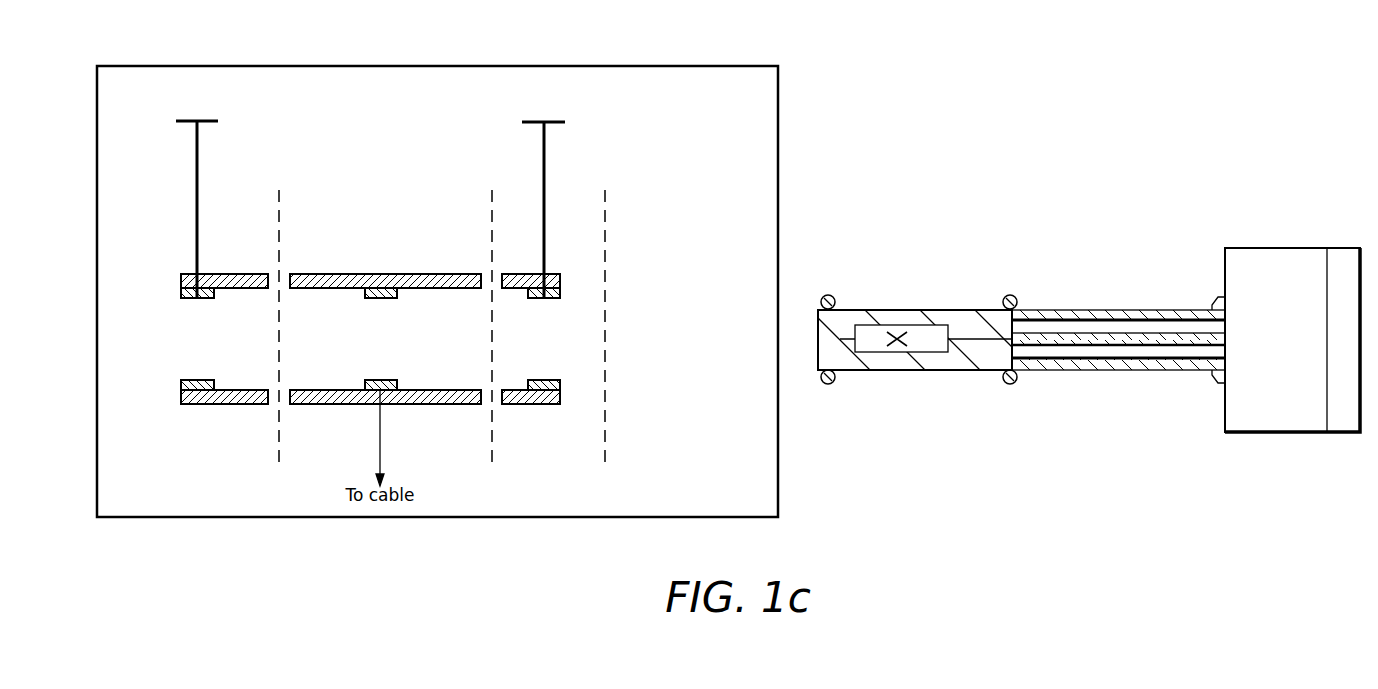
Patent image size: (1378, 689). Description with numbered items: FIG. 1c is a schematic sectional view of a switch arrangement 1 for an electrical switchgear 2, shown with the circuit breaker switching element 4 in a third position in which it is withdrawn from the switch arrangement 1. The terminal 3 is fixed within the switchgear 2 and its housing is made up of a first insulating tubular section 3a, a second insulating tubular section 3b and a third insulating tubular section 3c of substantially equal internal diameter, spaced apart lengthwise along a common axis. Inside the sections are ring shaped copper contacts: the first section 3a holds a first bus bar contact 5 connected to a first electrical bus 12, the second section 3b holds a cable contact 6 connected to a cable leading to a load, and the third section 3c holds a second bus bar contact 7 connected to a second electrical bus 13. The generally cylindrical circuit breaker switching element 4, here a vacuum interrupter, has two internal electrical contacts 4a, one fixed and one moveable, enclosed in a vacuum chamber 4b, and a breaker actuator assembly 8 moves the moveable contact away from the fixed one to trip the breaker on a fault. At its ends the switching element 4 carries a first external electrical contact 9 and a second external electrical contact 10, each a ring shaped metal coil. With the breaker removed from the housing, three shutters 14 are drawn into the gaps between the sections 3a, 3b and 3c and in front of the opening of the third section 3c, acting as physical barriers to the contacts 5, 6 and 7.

The switch arrangement 1 is at (1344, 248).
The electrical switchgear 2 is at (130, 66).
The terminal 3 is at (229, 443).
The first insulating tubular section 3a is at (224, 276).
The second insulating tubular section 3b is at (434, 276).
The third insulating tubular section 3c is at (558, 276).
The circuit breaker switching element 4 is at (931, 364).
The internal electrical contacts 4a is at (900, 346).
The vacuum chamber 4b is at (868, 332).
The first bus bar contact 5 is at (181, 292).
The cable contact 6 is at (386, 290).
The second bus bar contact 7 is at (560, 293).
The breaker actuator assembly 8 is at (1276, 248).
The first external electrical contact 9 is at (835, 300).
The second external electrical contact 10 is at (1018, 300).
The first electrical bus 12 is at (178, 121).
The second electrical bus 13 is at (524, 122).
The shutters 14 is at (279, 200).